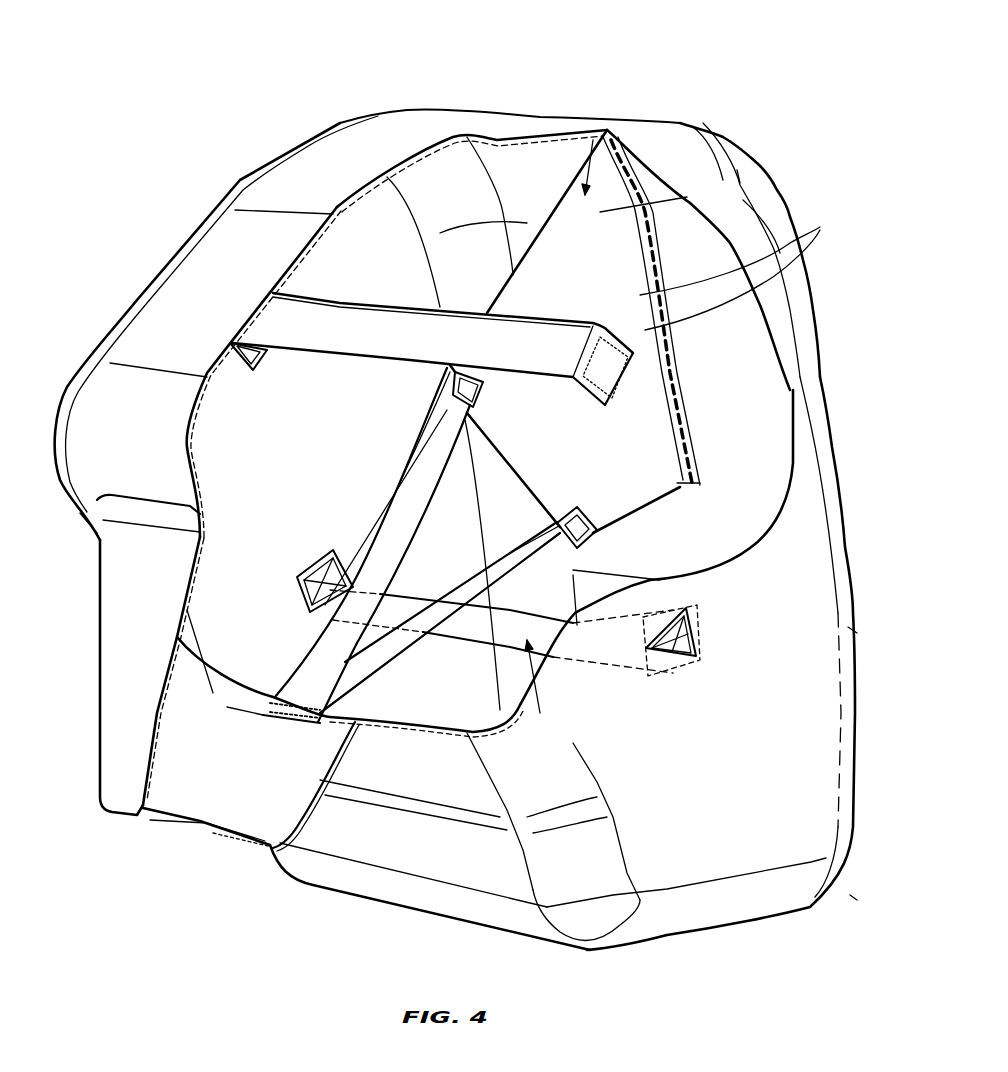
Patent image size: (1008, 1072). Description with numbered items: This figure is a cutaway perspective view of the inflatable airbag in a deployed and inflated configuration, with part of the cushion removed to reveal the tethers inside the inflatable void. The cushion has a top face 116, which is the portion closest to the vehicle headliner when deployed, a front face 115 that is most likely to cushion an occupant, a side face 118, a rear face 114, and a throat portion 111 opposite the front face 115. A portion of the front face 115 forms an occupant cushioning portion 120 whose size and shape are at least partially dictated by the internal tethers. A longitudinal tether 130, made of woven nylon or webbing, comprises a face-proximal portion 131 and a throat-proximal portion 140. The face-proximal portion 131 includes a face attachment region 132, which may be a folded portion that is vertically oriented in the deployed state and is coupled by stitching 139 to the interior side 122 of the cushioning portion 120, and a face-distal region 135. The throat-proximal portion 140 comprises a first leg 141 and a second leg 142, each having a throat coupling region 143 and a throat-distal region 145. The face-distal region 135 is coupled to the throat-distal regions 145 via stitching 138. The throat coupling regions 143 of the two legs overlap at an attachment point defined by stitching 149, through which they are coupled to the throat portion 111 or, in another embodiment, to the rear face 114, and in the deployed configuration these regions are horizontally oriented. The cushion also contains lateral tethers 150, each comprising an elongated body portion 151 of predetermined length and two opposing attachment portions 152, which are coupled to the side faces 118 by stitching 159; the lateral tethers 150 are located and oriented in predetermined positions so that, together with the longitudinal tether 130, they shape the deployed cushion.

The throat portion 111 is at (120, 680).
The rear face 114 is at (422, 844).
The front face 115 is at (742, 356).
The top face 116 is at (350, 179).
The side face 118 is at (716, 759).
The occupant cushioning portion 120 is at (678, 255).
The interior side 122 is at (766, 419).
The longitudinal tether 130 is at (607, 130).
The face-proximal portion 131 is at (655, 160).
The face attachment region 132 is at (690, 202).
The face-distal region 135 is at (566, 462).
The stitching 138 is at (478, 384).
The stitching 139 is at (820, 227).
The throat-proximal portion 140 is at (372, 493).
The first leg 141 is at (377, 527).
The second leg 142 is at (475, 575).
The throat coupling region 143 is at (305, 692).
The throat-distal region 145 is at (447, 410).
The stitching 149 is at (280, 723).
The lateral tether 150 is at (358, 320).
The elongated body portion 151 is at (398, 325).
The attachment portion 152 is at (263, 372).
The stitching 159 is at (625, 395).